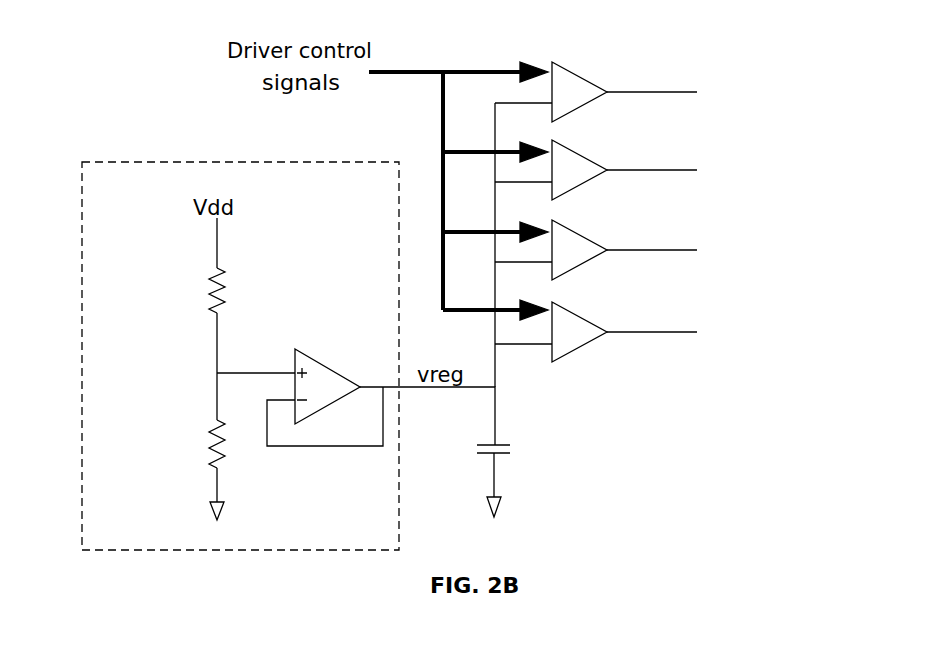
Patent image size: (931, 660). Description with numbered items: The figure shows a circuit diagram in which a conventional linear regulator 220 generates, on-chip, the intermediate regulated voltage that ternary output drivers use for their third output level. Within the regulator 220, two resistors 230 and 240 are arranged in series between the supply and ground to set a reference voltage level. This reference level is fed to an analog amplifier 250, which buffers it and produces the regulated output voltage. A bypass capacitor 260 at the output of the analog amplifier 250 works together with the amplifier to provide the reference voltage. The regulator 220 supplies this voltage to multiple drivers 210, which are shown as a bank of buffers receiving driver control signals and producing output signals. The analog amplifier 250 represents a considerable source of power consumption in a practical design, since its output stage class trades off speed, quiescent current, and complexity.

The drivers 210 is at (593, 318).
The linear regulator 220 is at (80, 157).
The resistor 230 is at (205, 288).
The resistor 240 is at (205, 438).
The analog amplifier 250 is at (333, 368).
The bypass capacitor 260 is at (517, 442).